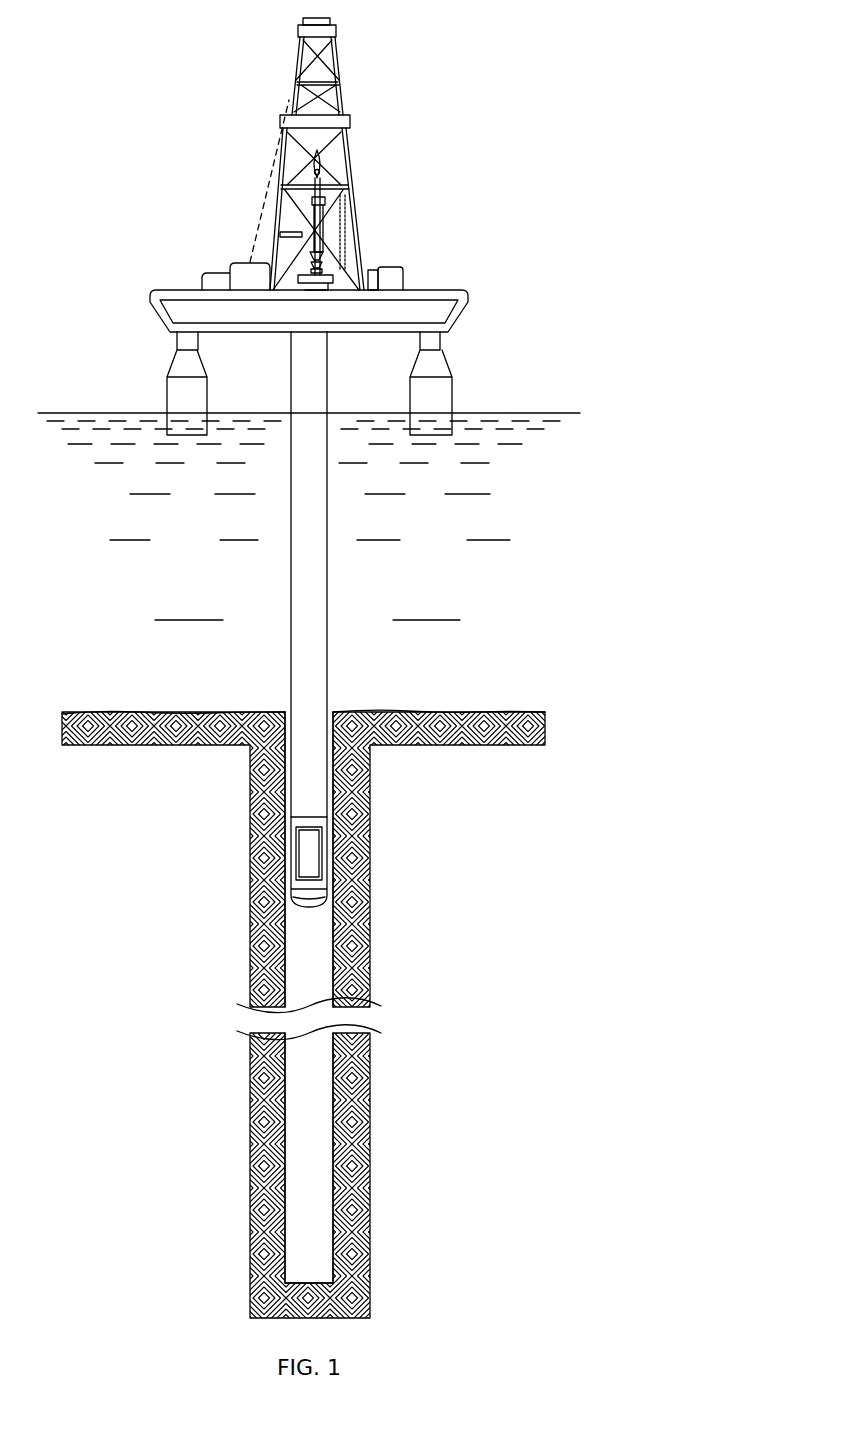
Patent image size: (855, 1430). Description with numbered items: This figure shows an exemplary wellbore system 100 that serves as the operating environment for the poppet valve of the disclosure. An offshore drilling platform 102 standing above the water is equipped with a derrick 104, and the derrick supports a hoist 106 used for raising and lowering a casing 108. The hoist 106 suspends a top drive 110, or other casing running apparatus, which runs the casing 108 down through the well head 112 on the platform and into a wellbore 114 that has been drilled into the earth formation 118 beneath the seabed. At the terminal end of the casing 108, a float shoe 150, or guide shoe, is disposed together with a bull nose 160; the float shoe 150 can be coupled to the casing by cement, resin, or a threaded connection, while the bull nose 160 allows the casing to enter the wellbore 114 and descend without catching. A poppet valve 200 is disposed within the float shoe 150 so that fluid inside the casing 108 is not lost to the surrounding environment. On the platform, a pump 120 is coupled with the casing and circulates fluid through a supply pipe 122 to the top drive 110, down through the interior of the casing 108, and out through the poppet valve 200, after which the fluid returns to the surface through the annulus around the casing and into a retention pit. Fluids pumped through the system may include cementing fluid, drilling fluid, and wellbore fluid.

The wellbore system 100 is at (225, 34).
The drilling platform 102 is at (455, 313).
The derrick 104 is at (342, 97).
The hoist 106 is at (340, 167).
The casing 108 is at (328, 678).
The top drive 110 is at (348, 203).
The well head 112 is at (328, 268).
The wellbore 114 is at (328, 958).
The earth formation 118 is at (252, 960).
The pump 120 is at (407, 283).
The supply pipe 122 is at (372, 275).
The float shoe 150 is at (335, 825).
The bull nose 160 is at (286, 897).
The poppet valve 200 is at (325, 862).